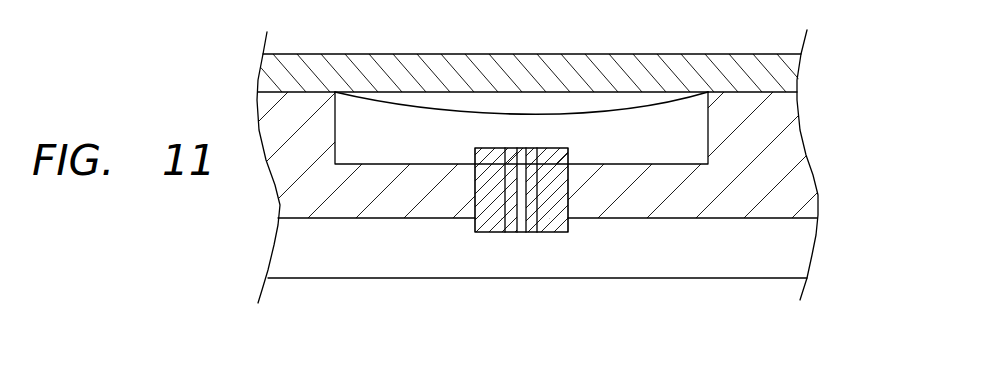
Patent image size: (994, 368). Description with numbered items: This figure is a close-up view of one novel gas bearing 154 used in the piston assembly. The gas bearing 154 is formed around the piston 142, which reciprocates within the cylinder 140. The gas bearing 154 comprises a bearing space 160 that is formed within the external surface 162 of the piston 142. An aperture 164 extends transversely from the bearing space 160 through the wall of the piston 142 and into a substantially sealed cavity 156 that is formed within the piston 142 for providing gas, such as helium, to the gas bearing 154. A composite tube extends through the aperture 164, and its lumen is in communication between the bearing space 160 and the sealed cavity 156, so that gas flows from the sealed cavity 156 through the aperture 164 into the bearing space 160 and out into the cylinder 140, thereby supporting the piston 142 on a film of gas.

The cylinder 140 is at (462, 54).
The piston 142 is at (780, 153).
The gas bearing 154 is at (612, 92).
The sealed cavity 156 is at (293, 253).
The bearing space 160 is at (383, 130).
The external surface 162 is at (738, 88).
The aperture 164 is at (558, 208).